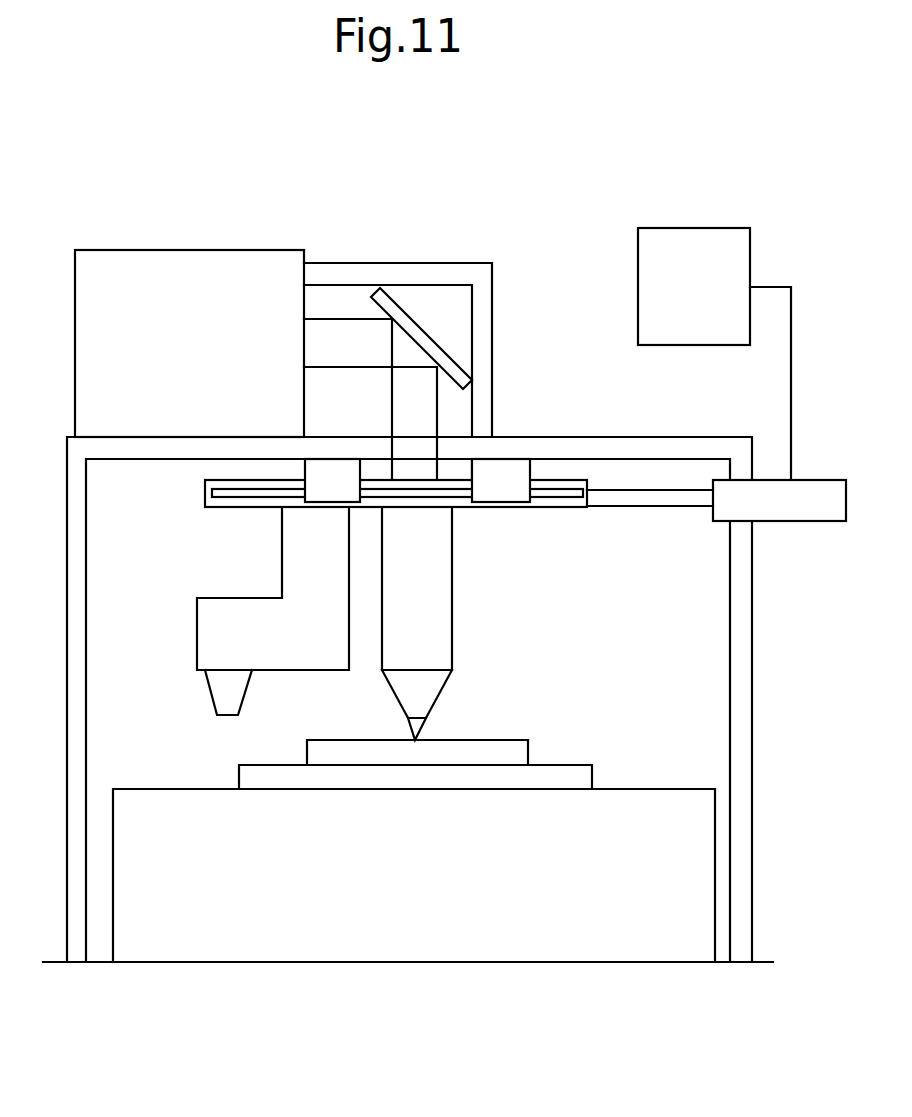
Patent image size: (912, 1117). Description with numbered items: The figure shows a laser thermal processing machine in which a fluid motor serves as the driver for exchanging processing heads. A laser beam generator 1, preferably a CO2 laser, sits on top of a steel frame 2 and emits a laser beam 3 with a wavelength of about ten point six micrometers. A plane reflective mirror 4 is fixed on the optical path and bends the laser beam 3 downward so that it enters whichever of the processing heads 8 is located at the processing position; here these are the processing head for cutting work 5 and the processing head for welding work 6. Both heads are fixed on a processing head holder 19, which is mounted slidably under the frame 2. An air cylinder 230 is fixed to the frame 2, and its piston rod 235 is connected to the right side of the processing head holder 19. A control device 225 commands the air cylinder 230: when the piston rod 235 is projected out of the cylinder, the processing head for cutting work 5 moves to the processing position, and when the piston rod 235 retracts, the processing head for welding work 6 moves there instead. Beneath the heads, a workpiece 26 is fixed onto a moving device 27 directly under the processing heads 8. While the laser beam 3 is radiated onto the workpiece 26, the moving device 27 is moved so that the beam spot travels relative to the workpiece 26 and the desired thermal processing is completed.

The laser beam generator 1 is at (171, 253).
The frame 2 is at (68, 683).
The laser beam 3 is at (345, 318).
The plane reflective mirror 4 is at (436, 335).
The processing head for cutting work 5 is at (396, 695).
The processing head for welding work 6 is at (198, 622).
The processing heads 8 is at (472, 627).
The processing head holder 19 is at (239, 508).
The workpiece 26 is at (527, 751).
The moving device 27 is at (225, 775).
The control device 225 is at (690, 232).
The air cylinder 230 is at (799, 523).
The piston rod 235 is at (648, 508).